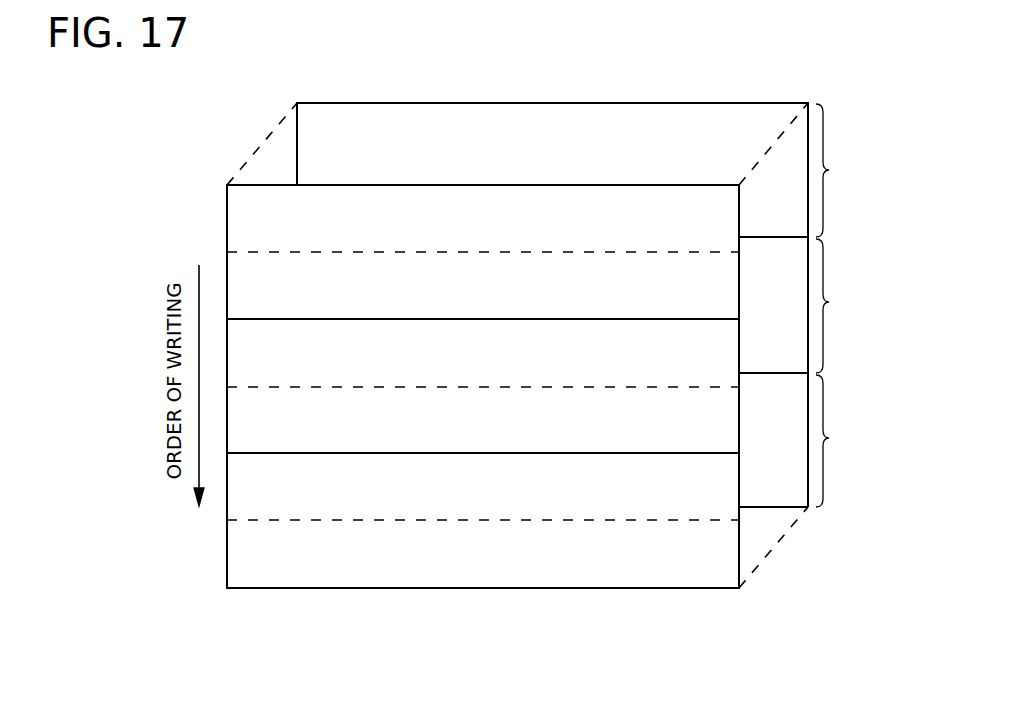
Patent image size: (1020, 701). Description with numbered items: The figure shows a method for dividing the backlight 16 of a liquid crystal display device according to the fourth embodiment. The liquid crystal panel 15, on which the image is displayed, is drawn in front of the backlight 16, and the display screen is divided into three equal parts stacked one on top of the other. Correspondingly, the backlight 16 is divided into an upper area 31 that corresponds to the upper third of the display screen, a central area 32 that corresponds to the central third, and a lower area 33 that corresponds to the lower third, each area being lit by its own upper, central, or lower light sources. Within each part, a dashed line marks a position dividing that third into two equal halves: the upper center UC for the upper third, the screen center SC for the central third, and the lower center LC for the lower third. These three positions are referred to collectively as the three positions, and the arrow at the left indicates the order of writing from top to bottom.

The liquid crystal panel 15 is at (483, 588).
The backlight 16 is at (552, 103).
The upper area 31 is at (840, 170).
The central area 32 is at (840, 306).
The lower area 33 is at (840, 441).
The upper center UC is at (487, 252).
The screen center SC is at (487, 387).
The lower center LC is at (487, 520).